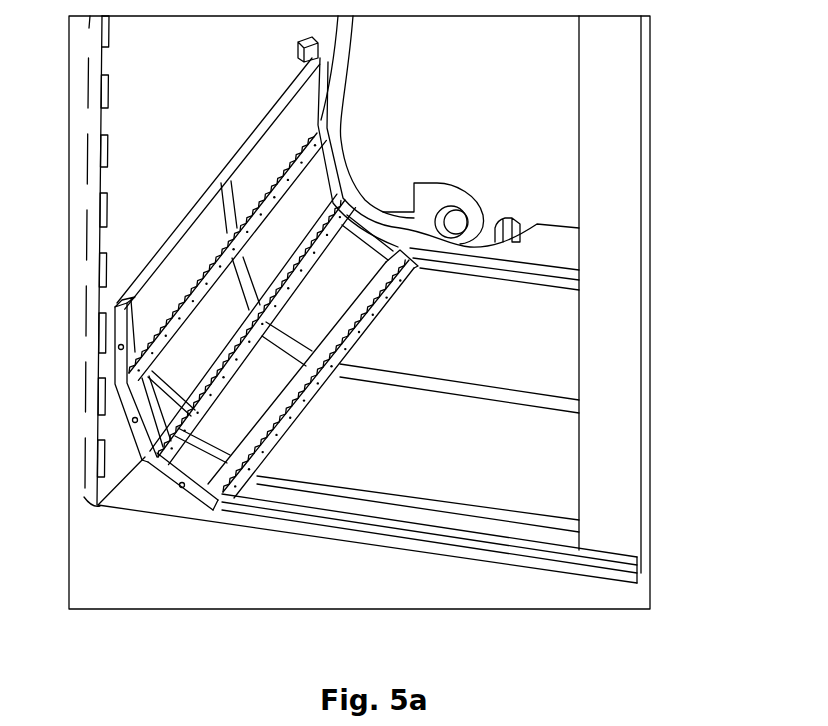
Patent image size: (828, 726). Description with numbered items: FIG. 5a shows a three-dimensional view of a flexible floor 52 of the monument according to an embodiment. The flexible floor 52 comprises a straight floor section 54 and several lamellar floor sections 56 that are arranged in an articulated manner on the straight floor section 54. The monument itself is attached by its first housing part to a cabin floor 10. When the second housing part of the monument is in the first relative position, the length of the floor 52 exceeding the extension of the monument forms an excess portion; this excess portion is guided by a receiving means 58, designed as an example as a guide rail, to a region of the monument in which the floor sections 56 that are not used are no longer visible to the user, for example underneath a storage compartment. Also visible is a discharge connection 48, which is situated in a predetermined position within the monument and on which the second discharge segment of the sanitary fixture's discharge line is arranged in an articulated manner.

The cabin floor 10 is at (387, 590).
The discharge connection 48 is at (453, 218).
The flexible floor 52 is at (288, 564).
The straight floor section 54 is at (562, 468).
The lamellar floor sections 56 is at (207, 462).
The receiving means 58 is at (348, 203).